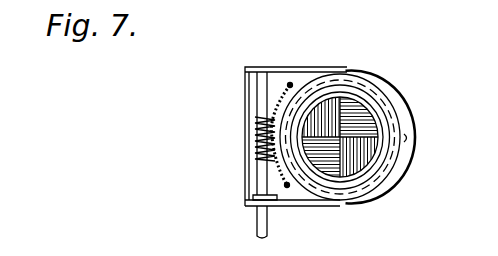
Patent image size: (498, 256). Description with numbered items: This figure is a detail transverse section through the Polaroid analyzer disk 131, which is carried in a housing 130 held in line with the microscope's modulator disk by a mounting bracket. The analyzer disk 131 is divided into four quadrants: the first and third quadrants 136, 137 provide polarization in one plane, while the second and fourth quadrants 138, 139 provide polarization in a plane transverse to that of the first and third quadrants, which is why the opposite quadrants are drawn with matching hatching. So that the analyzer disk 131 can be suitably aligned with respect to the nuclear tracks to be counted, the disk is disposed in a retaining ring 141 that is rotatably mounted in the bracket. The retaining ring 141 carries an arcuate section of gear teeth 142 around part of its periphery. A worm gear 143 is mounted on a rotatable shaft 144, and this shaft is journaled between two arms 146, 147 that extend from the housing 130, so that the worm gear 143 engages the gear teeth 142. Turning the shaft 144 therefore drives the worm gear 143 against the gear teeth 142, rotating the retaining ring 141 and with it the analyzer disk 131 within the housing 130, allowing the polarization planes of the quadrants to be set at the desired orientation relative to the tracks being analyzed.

The housing 130 is at (382, 193).
The Polaroid analyzer disk 131 is at (375, 124).
The first quadrant 136 is at (367, 128).
The third quadrant 137 is at (325, 160).
The second quadrant 138 is at (330, 100).
The fourth quadrant 139 is at (365, 147).
The retaining ring 141 is at (358, 113).
The gear teeth 142 is at (276, 169).
The worm gear 143 is at (257, 140).
The rotatable shaft 144 is at (256, 227).
The arm 146 is at (291, 67).
The arm 147 is at (286, 206).